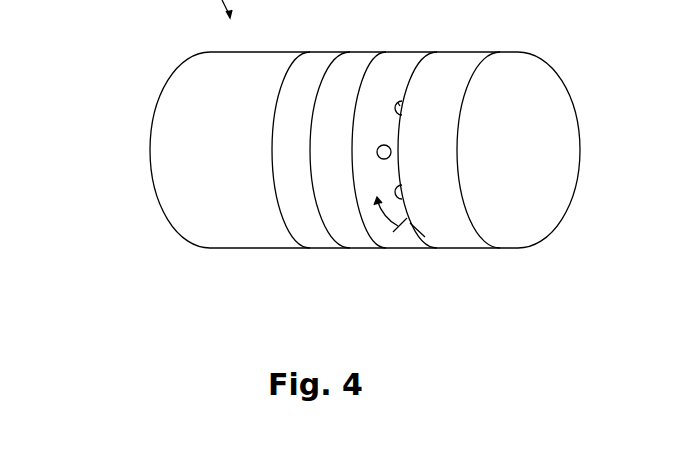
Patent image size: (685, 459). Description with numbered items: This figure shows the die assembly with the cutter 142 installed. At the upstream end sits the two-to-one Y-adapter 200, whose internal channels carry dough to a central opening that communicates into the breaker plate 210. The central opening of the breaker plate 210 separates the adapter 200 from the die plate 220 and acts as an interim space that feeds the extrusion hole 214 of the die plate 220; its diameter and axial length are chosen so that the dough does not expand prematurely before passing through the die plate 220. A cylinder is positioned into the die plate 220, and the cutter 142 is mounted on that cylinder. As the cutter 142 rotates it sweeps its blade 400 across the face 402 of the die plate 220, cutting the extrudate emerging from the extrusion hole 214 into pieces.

The Y-adapter 200 is at (198, 150).
The breaker plate 210 is at (312, 216).
The die plate 220 is at (343, 218).
The blade 400 is at (405, 226).
The face 402 is at (410, 70).
The extrusion hole 214 is at (398, 103).
The cutter 142 is at (553, 133).